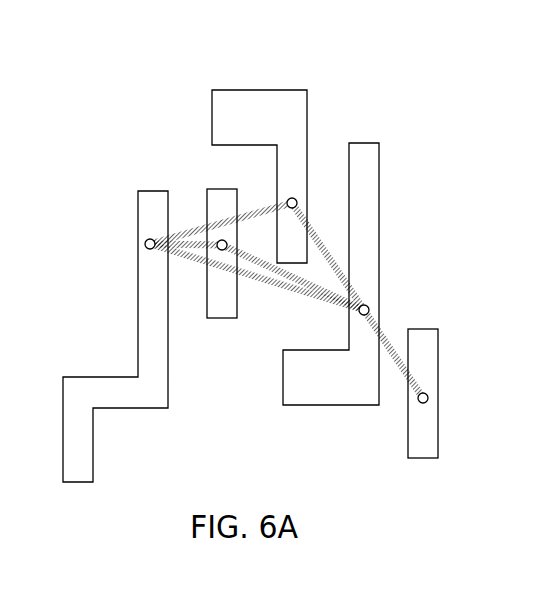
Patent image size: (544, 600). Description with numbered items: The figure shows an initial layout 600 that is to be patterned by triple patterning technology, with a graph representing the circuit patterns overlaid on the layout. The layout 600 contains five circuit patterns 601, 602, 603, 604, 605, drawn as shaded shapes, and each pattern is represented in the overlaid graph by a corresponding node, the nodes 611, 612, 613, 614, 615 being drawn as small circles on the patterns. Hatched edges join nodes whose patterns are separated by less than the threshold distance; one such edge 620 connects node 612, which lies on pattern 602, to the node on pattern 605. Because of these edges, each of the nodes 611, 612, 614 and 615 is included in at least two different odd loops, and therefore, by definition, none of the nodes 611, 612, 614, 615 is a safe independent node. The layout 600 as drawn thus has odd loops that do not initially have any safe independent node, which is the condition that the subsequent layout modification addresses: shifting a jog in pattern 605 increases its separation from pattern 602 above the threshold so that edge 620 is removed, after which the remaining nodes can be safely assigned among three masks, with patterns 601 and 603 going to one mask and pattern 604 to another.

The initial layout 600 is at (366, 97).
The pattern 601 is at (264, 90).
The pattern 602 is at (380, 169).
The pattern 603 is at (439, 343).
The pattern 604 is at (209, 189).
The pattern 605 is at (138, 346).
The node 611 is at (296, 198).
The node 612 is at (370, 307).
The node 613 is at (428, 398).
The node 614 is at (226, 250).
The node 615 is at (146, 244).
The edge 620 is at (308, 300).